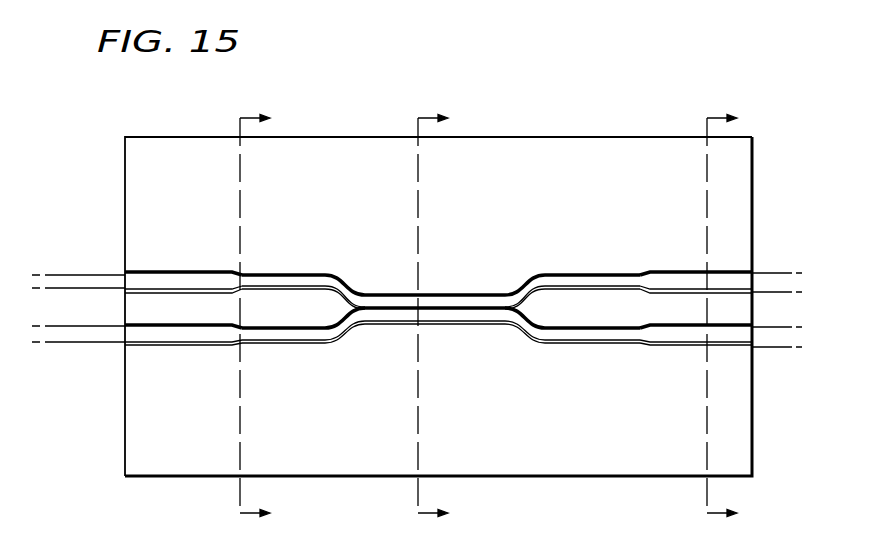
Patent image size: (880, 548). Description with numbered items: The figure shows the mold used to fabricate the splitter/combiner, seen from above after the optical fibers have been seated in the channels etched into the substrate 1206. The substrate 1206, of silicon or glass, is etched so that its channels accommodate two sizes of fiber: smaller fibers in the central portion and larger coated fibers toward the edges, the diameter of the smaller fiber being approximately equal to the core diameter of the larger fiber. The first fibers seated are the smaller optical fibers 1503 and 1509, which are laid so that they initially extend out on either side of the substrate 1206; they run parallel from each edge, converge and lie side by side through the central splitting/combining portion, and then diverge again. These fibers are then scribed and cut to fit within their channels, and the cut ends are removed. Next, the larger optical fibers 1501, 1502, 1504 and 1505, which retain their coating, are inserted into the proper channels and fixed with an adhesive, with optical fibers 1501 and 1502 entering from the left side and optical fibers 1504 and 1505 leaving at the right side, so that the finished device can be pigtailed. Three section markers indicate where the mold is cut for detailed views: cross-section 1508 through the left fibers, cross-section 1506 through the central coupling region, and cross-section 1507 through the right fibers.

The substrate 1206 is at (195, 477).
The optical fiber 1501 is at (68, 275).
The optical fiber 1502 is at (105, 347).
The optical fiber 1503 is at (295, 283).
The optical fiber 1504 is at (770, 280).
The optical fiber 1505 is at (775, 347).
The cross-section 1506 is at (416, 130).
The cross-section 1507 is at (705, 130).
The cross-section 1508 is at (235, 127).
The optical fiber 1509 is at (302, 335).